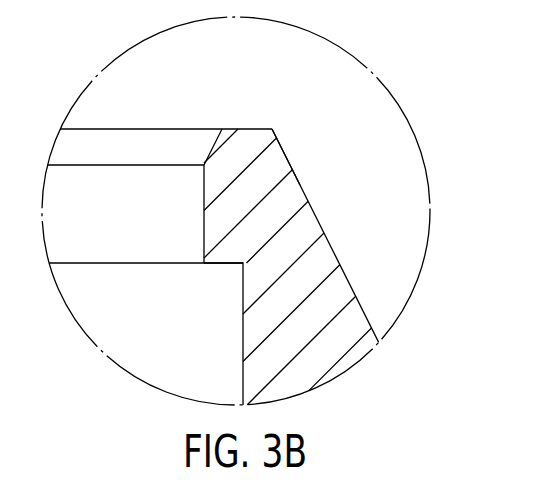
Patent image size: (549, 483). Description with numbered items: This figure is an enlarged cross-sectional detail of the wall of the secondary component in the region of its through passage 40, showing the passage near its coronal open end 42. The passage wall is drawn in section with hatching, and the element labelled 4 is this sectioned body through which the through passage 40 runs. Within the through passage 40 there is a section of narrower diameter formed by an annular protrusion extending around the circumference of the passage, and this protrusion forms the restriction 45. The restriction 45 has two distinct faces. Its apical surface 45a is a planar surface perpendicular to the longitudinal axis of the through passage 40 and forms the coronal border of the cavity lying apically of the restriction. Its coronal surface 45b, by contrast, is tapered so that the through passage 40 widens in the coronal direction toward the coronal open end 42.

The sealing member 4 is at (317, 322).
The through passage 40 is at (115, 154).
The coronal open end 42 is at (163, 128).
The restriction 45 is at (207, 198).
The apical surface 45a is at (228, 266).
The coronal surface 45b is at (209, 152).